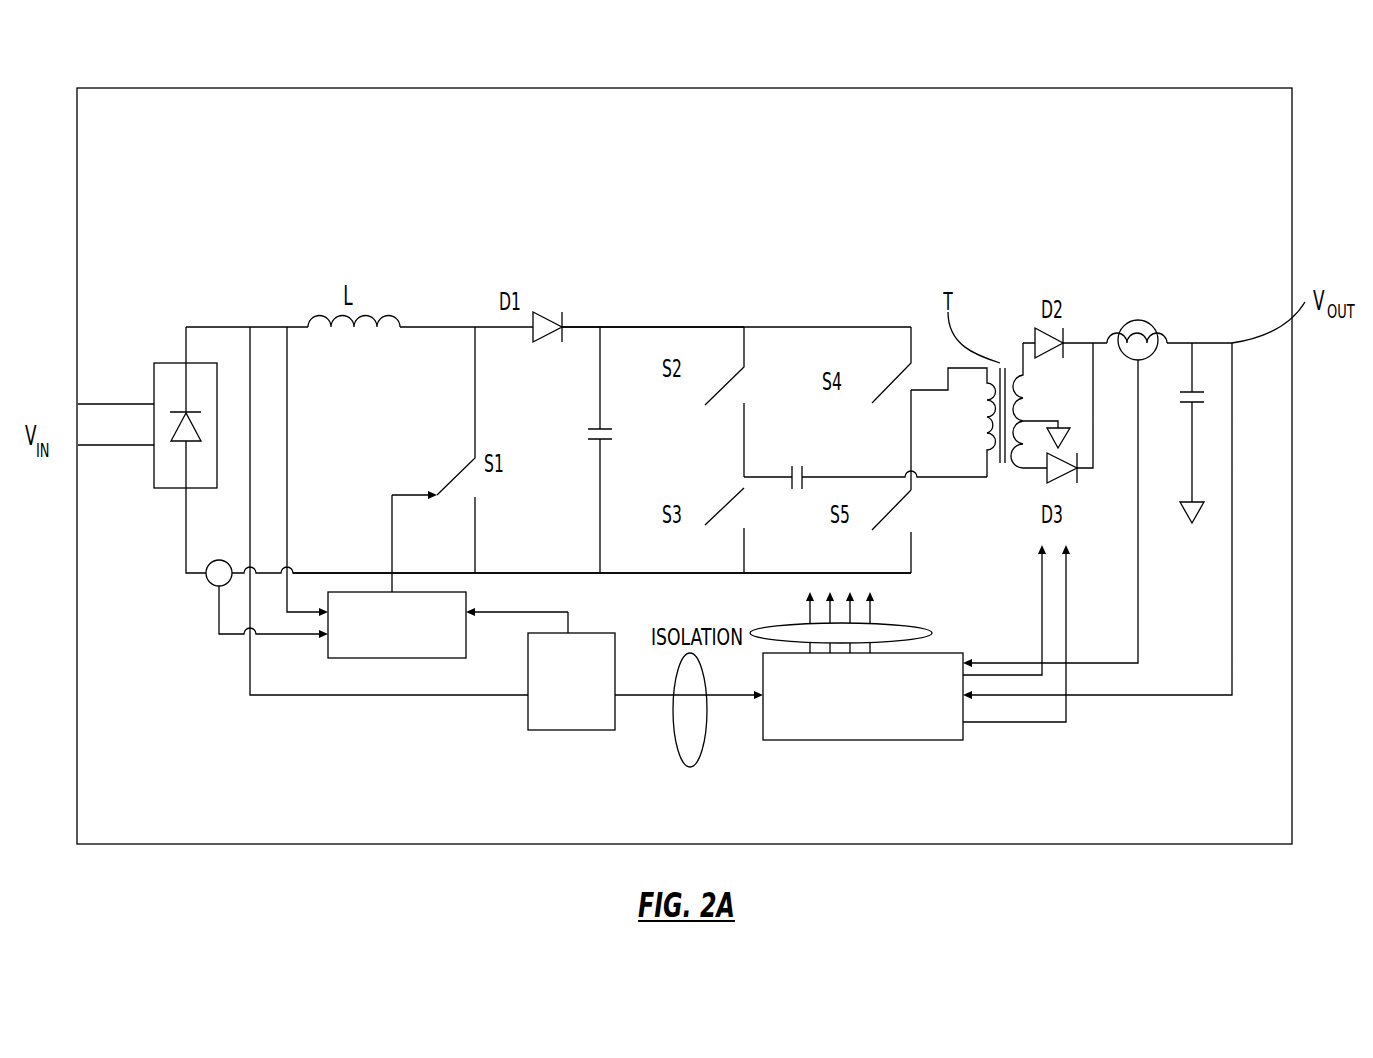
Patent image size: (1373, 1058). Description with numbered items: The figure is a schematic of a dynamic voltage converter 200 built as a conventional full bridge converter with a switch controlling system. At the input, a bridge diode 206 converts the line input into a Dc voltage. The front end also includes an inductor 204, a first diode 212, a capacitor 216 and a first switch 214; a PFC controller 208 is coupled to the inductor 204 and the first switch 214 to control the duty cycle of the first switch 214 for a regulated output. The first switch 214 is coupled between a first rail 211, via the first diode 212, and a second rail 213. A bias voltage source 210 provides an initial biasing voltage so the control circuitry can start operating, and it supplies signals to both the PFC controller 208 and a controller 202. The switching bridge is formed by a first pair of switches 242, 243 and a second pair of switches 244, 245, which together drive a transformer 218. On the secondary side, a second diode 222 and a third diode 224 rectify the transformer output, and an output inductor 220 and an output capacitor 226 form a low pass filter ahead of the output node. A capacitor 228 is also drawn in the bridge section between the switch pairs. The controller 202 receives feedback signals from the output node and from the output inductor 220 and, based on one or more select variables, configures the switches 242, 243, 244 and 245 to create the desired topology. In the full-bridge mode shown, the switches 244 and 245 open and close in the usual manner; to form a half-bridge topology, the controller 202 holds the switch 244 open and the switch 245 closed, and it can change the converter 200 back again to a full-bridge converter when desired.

The dynamic voltage converter 200 is at (1240, 172).
The controller 202 is at (905, 740).
The inductor 204 is at (385, 312).
The bridge diode 206 is at (167, 375).
The PFC controller 208 is at (458, 650).
The bias V 210 is at (562, 733).
The first rail 211 is at (630, 327).
The diode 212 is at (550, 312).
The second rail 213 is at (573, 573).
The switch 214 is at (492, 475).
The capacitor 216 is at (590, 430).
The transformer 218 is at (1005, 330).
The output inductor 220 is at (1163, 332).
The diode 222 is at (1067, 320).
The diode 224 is at (1078, 487).
The output capacitor 226 is at (1205, 397).
The resonant capacitor 228 is at (800, 470).
The switch 242 is at (728, 377).
The switch 243 is at (730, 503).
The switch 244 is at (855, 353).
The switch 245 is at (907, 515).